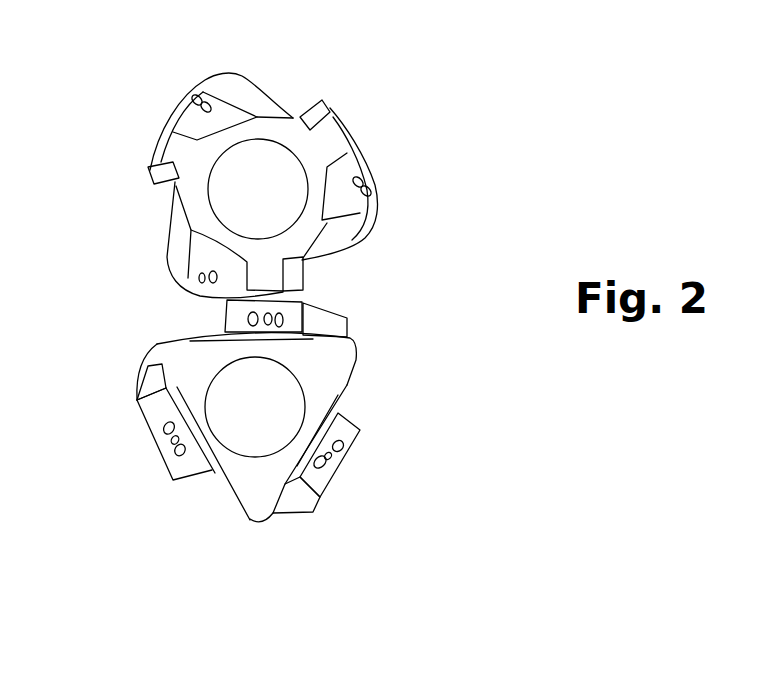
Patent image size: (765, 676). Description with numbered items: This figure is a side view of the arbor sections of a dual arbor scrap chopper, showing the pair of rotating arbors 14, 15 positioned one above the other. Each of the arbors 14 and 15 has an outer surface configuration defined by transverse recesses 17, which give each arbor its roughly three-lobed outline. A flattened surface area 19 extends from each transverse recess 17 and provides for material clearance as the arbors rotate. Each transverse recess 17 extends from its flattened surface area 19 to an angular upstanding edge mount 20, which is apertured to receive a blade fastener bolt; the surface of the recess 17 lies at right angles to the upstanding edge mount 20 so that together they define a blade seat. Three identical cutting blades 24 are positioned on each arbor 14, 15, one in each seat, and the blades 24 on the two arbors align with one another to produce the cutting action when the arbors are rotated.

The arbor 14 is at (287, 213).
The arbor 15 is at (282, 431).
The transverse recess 17 is at (298, 82).
The flattened surface area 19 is at (198, 343).
The angular upstanding edge mount 20 is at (334, 112).
The cutting blade 24 is at (330, 103).